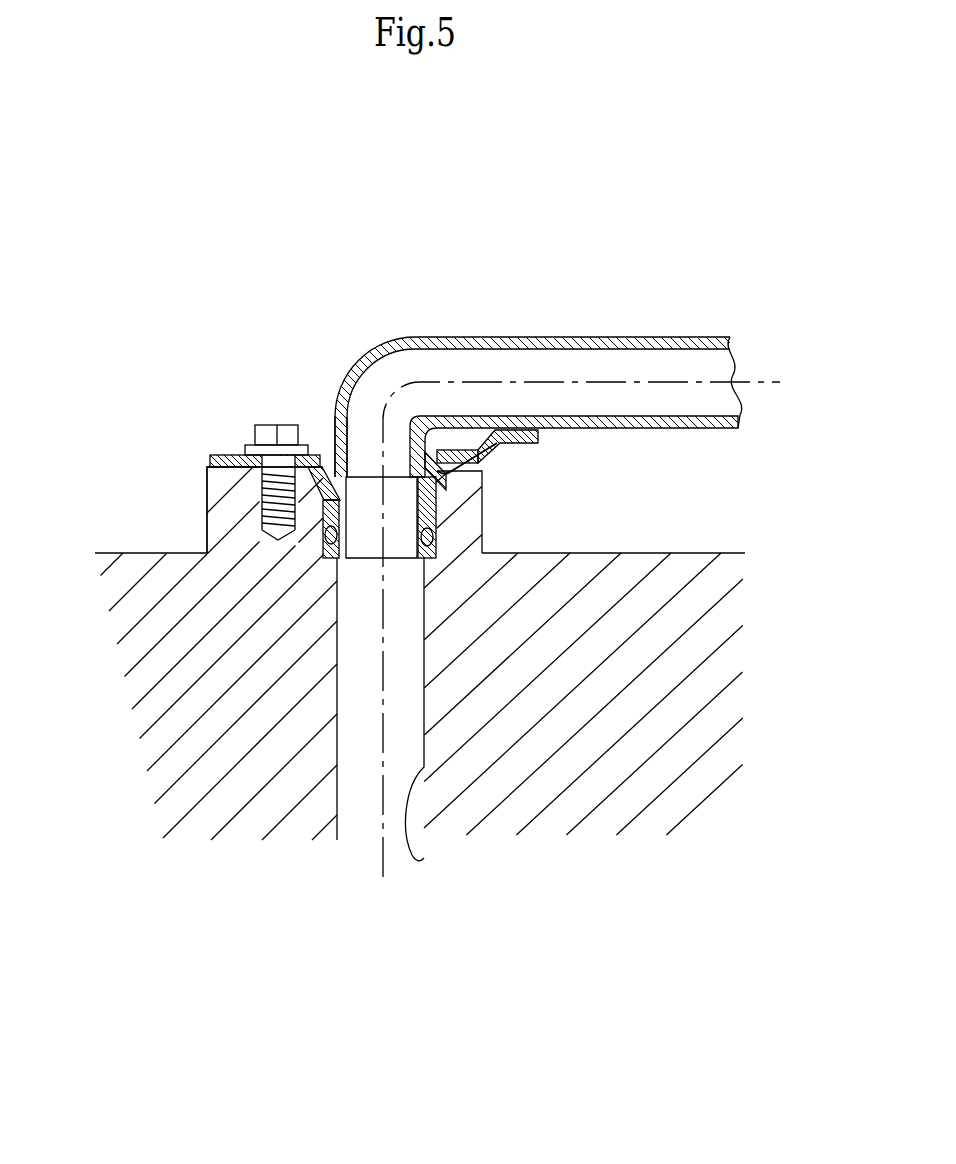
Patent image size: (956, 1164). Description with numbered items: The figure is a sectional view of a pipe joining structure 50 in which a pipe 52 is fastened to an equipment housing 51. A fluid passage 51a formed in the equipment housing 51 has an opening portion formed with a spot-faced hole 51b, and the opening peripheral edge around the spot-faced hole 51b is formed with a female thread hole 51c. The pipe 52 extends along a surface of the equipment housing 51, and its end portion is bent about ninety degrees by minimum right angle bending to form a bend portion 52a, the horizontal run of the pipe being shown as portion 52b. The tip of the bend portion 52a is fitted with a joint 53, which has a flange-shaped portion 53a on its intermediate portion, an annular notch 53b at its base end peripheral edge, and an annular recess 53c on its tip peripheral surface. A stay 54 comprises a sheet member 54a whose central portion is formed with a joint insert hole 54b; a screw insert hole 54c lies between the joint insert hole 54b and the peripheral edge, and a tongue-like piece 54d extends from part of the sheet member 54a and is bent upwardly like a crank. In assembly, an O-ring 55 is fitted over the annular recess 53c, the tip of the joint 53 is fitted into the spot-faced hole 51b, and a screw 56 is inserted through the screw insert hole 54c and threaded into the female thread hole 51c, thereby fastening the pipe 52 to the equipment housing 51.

The pipe joining structure 50 is at (245, 336).
The equipment housing 51 is at (644, 540).
The fluid passage 51a is at (423, 860).
The spot-faced hole 51b is at (343, 558).
The female thread hole 51c is at (202, 515).
The pipe 52 is at (604, 325).
The bend portion 52a is at (333, 440).
The horizontal portion of pipe 52b is at (616, 440).
The joint 53 is at (437, 493).
The flange-shaped portion 53a is at (482, 467).
The annular notch 53b is at (447, 443).
The annular recess 53c is at (437, 552).
The stay 54 is at (231, 439).
The sheet member 54a is at (240, 453).
The joint insert hole 54b is at (357, 440).
The screw insert hole 54c is at (212, 480).
The tongue-like piece 54d is at (517, 430).
The O-ring 55 is at (437, 540).
The screw 56 is at (277, 425).